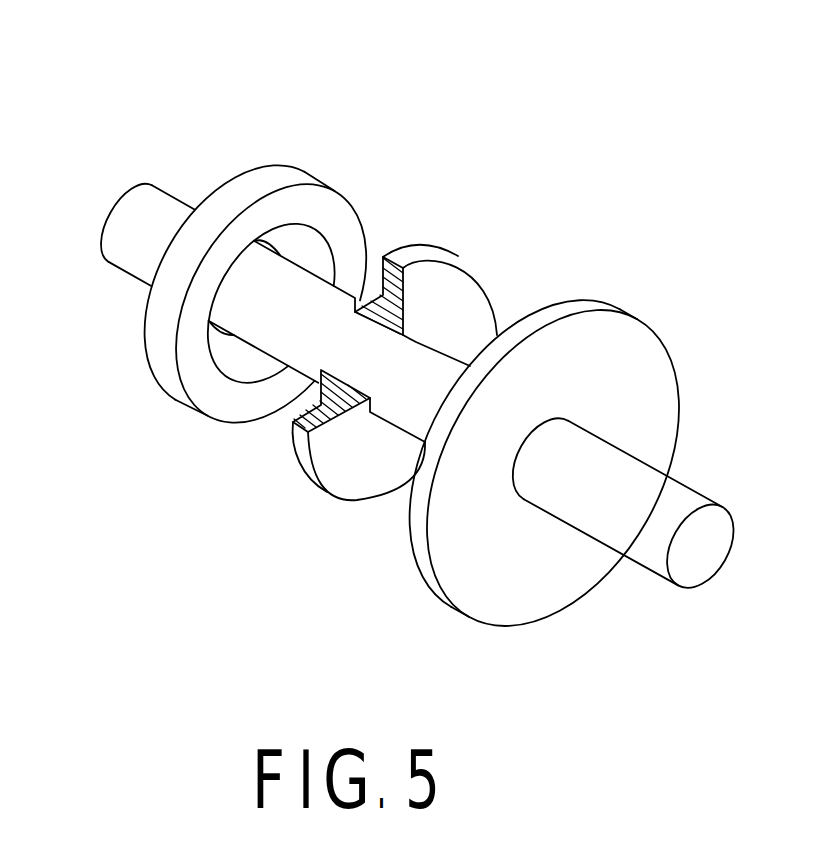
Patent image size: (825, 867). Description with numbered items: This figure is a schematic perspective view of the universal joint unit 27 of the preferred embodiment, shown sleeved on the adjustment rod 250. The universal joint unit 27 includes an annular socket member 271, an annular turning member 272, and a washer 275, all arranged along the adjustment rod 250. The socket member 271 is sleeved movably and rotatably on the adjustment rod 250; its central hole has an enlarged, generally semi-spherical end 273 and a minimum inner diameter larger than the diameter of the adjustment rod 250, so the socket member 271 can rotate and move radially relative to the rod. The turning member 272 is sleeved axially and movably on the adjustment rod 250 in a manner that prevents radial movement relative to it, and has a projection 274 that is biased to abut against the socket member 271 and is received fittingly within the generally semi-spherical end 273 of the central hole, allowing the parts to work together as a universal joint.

The universal joint unit 27 is at (547, 168).
The adjustment rod 250 is at (682, 503).
The annular socket member 271 is at (172, 384).
The annular turning member 272 is at (347, 472).
The generally semi-spherical end 273 is at (300, 248).
The projection 274 is at (371, 297).
The washer 275 is at (623, 347).